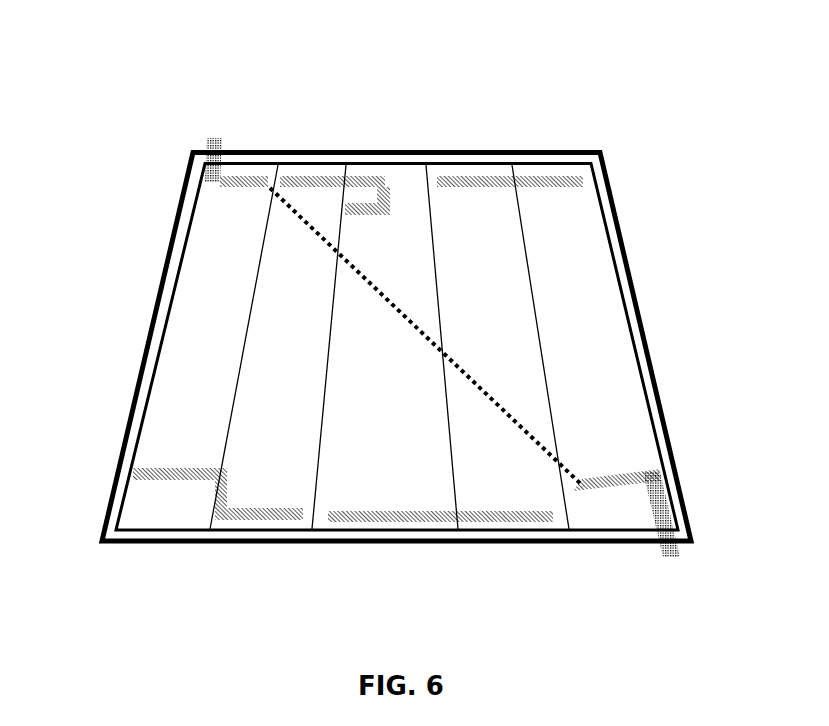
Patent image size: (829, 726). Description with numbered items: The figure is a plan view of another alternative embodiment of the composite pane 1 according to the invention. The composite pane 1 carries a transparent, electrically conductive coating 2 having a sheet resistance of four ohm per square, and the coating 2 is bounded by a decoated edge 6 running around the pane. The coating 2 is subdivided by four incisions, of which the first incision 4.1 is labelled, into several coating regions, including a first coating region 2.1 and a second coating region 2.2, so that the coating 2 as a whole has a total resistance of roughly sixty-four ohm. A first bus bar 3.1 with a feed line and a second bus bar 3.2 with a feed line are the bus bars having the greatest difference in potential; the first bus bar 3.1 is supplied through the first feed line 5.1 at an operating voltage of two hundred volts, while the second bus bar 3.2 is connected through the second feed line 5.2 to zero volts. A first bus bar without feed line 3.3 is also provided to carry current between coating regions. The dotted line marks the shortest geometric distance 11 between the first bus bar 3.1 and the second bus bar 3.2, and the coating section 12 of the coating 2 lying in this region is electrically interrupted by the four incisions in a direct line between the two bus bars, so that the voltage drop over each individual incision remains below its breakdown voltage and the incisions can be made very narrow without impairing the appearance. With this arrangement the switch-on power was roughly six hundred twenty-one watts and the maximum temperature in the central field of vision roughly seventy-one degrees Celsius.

The composite pane 1 is at (402, 118).
The coating 2 is at (170, 397).
The first coating region 2.1 is at (203, 307).
The second coating region 2.2 is at (288, 283).
The first bus bar with feed line 3.1 is at (243, 177).
The second bus bar with feed line 3.2 is at (617, 477).
The first bus bar without feed line 3.3 is at (178, 475).
The first incision 4.1 is at (227, 417).
The first feed line 5.1 is at (193, 154).
The second feed line 5.2 is at (673, 537).
The decoated edge 6 is at (258, 535).
The shortest geometric distance 11 is at (390, 303).
The coating section 12 is at (515, 378).